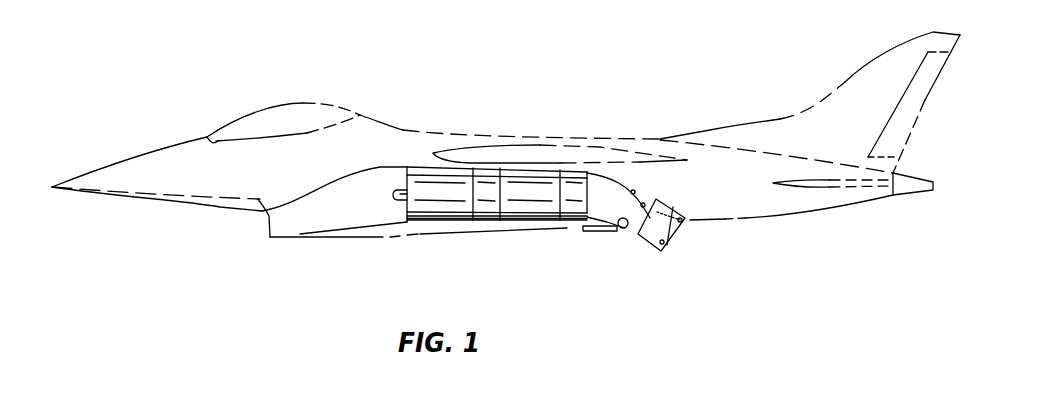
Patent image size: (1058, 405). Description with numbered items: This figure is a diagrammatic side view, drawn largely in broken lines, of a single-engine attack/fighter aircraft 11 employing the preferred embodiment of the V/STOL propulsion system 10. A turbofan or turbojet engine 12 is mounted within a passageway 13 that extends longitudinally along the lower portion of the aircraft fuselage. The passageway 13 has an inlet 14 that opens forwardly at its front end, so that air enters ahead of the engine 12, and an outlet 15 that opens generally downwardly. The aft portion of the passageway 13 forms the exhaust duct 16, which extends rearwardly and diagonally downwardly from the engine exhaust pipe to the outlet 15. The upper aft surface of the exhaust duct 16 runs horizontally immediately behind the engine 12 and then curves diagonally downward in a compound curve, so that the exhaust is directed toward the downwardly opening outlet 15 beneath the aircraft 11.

The V/STOL propulsion system 10 is at (567, 237).
The single-engine attack/fighter aircraft 11 is at (375, 107).
The turbofan or turbojet engine 12 is at (487, 212).
The passageway 13 is at (338, 226).
The inlet 14 is at (267, 215).
The outlet 15 is at (622, 229).
The exhaust duct 16 is at (612, 194).